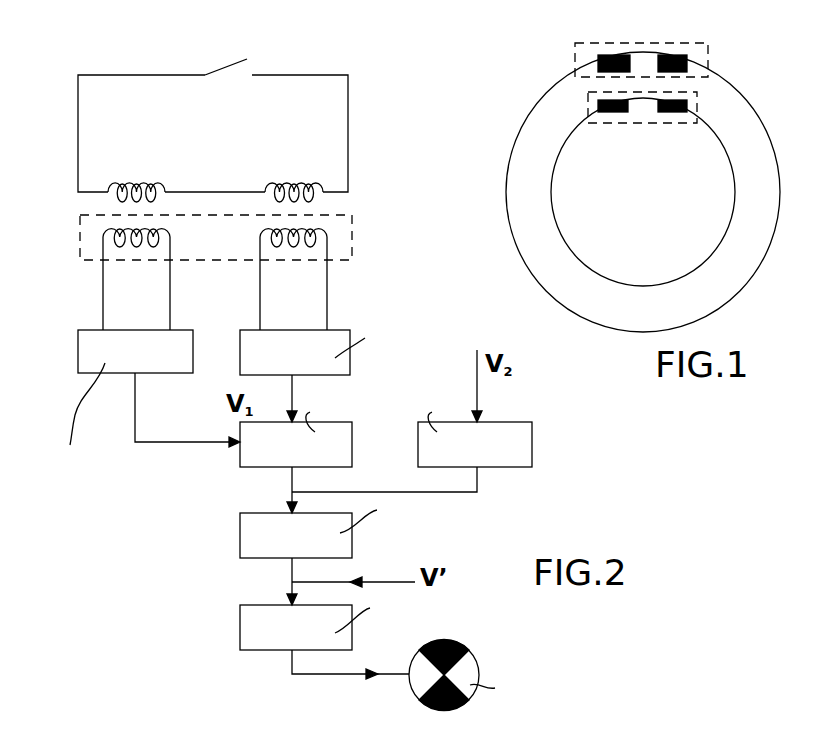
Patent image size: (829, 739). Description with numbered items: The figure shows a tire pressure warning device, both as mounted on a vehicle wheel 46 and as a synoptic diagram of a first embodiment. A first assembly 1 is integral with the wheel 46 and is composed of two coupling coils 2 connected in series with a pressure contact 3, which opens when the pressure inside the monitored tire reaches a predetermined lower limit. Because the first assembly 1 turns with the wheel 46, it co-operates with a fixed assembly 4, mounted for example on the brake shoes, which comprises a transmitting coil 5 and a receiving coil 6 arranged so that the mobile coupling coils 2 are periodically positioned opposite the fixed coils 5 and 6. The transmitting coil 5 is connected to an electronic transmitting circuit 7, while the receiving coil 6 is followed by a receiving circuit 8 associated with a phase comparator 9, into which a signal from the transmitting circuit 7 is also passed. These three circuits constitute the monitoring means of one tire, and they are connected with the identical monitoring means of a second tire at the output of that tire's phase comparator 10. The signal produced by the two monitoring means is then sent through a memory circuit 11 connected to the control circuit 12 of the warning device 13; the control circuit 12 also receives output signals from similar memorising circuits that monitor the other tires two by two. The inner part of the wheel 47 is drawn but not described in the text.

In FIG. 1, the first assembly 1 is at (695, 55).
In FIG. 2, the first assembly 1 is at (330, 95).
In FIG. 1, the coupling coils 2 is at (673, 55).
In FIG. 2, the coupling coils 2 is at (132, 177).
In FIG. 2, the pressure contact 3 is at (227, 58).
In FIG. 1, the fixed assembly 4 is at (687, 120).
In FIG. 2, the fixed assembly 4 is at (345, 228).
In FIG. 1, the transmitting coil 5 is at (598, 110).
In FIG. 2, the transmitting coil 5 is at (170, 233).
In FIG. 1, the receiving coil 6 is at (687, 105).
In FIG. 2, the receiving coil 6 is at (260, 245).
In FIG. 2, the transmitting circuit 7 is at (107, 408).
In FIG. 2, the receiving circuit 8 is at (340, 346).
In FIG. 2, the phase comparator 9 is at (333, 425).
In FIG. 2, the phase comparator 10 is at (475, 439).
In FIG. 2, the memory circuit 11 is at (341, 528).
In FIG. 2, the control circuit 12 is at (342, 625).
In FIG. 2, the warning device 13 is at (470, 670).
In FIG. 1, the wheel 46 is at (755, 165).
In FIG. 1, the ring inner portion 47 is at (567, 183).